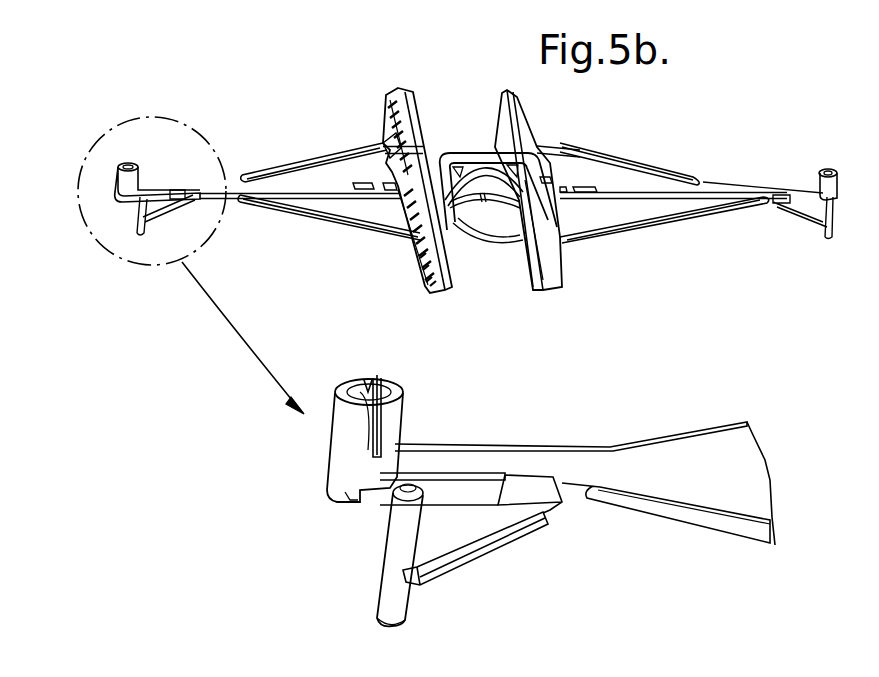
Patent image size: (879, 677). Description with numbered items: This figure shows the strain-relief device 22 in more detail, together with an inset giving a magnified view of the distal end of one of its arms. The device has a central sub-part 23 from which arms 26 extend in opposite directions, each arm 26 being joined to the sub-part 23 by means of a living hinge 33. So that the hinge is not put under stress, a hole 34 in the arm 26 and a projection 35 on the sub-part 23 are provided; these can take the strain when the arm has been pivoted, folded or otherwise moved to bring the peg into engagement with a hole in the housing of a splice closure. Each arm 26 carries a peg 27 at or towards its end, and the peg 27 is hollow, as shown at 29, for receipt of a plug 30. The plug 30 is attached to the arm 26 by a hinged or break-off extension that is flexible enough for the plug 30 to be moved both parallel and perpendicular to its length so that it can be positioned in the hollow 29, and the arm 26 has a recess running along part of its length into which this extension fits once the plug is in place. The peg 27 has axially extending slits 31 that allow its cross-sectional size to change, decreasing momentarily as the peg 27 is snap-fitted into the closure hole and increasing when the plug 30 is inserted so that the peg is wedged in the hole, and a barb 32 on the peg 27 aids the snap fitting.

The support assembly 22 is at (345, 104).
The sub-part 23 is at (500, 90).
The arm 26 is at (282, 160).
The peg 27 is at (120, 173).
The hollow 29 is at (393, 386).
The plug 30 is at (383, 583).
The slit 31 is at (367, 385).
The barb 32 is at (333, 457).
The living hinge 33 is at (423, 237).
The hole 34 is at (358, 193).
The projection 35 is at (383, 143).